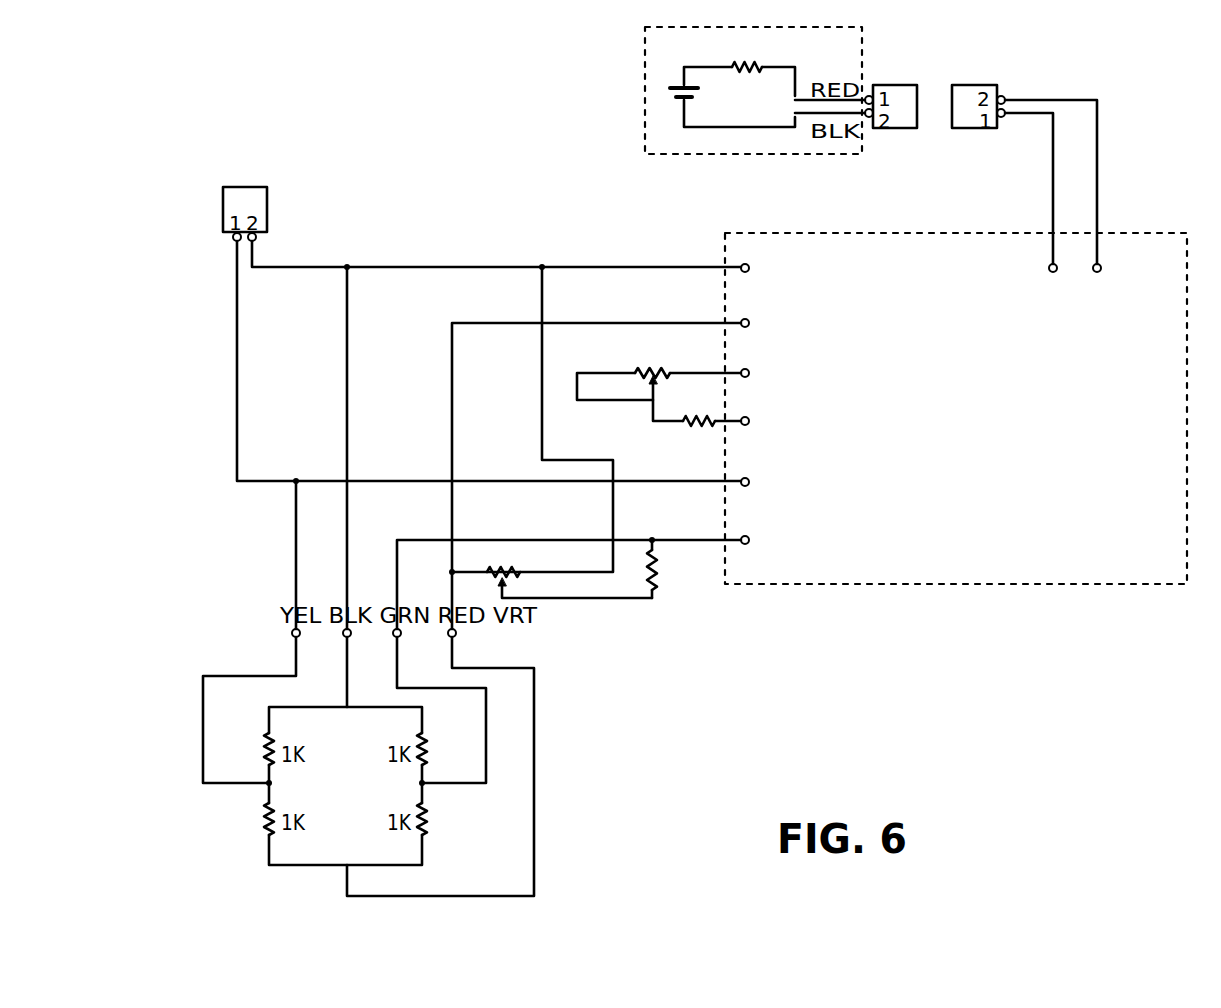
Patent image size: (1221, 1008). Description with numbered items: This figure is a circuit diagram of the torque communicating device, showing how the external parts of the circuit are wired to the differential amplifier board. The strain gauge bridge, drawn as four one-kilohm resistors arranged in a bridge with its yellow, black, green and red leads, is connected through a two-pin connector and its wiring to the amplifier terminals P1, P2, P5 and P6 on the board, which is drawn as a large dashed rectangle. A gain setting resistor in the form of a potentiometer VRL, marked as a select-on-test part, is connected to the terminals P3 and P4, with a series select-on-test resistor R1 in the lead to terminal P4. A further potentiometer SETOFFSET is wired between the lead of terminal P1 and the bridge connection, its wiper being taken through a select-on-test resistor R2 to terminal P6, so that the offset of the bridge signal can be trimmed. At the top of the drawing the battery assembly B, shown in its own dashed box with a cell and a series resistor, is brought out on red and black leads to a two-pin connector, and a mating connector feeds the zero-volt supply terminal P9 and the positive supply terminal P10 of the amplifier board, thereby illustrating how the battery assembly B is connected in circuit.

The terminal P1 is at (750, 255).
The terminal P2 is at (750, 311).
The terminal P3 is at (750, 361).
The terminal P4 is at (750, 409).
The terminal P5 is at (749, 471).
The terminal P6 is at (749, 529).
The connector pin P9 (0V) P9 is at (1034, 217).
The connector pin P10 (+V) P10 is at (1065, 211).
The potentiometer VRL (select on test) VRL is at (659, 363).
The resistor R1 (select on test) R1 is at (684, 426).
The resistor R2 (select on test) R2 is at (679, 571).
The set offset potentiometer SETOFFSET is at (554, 572).
The battery assembly B is at (973, 584).